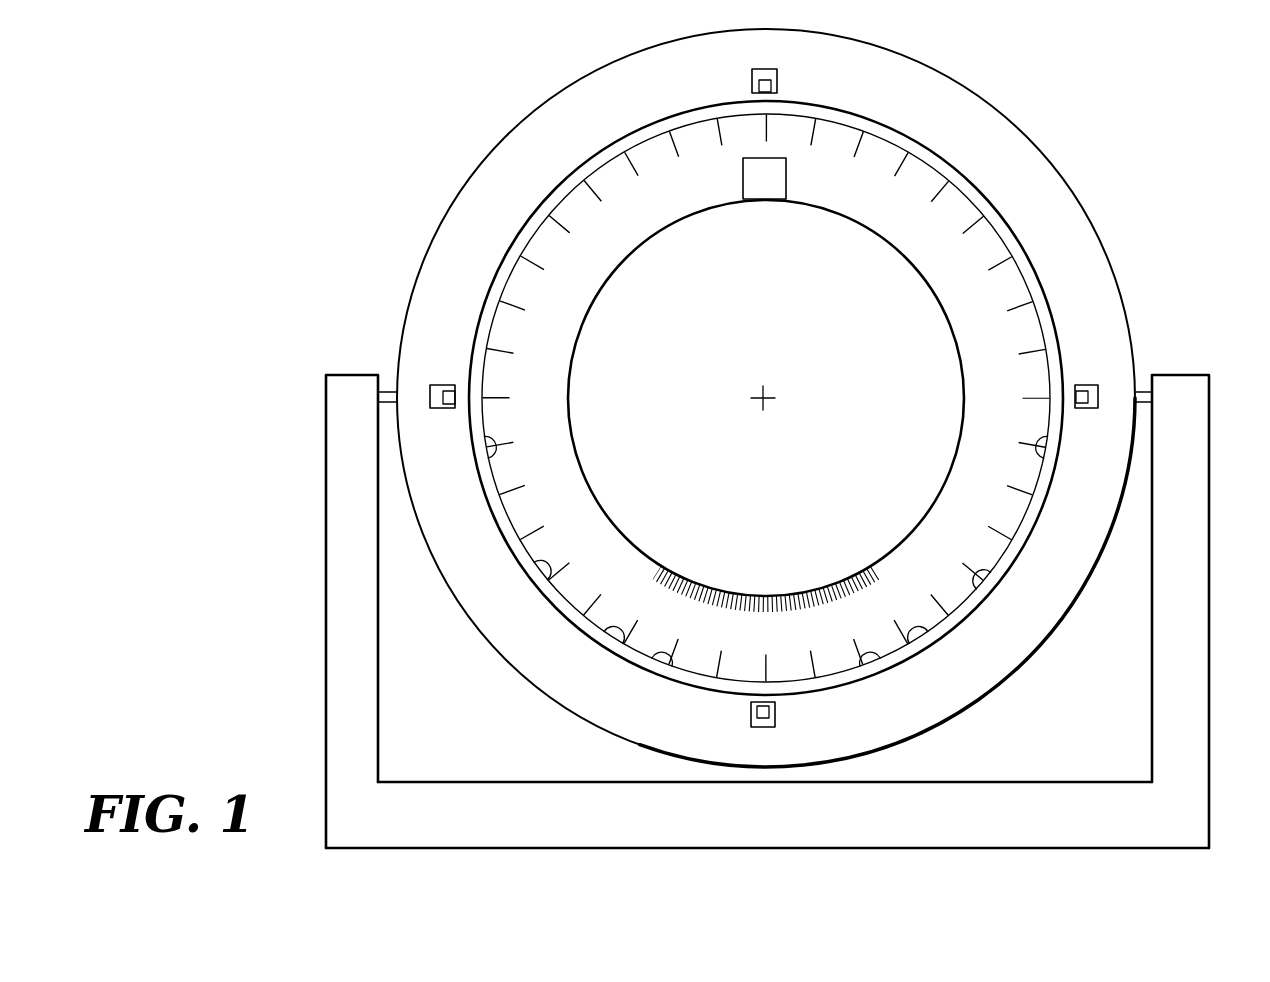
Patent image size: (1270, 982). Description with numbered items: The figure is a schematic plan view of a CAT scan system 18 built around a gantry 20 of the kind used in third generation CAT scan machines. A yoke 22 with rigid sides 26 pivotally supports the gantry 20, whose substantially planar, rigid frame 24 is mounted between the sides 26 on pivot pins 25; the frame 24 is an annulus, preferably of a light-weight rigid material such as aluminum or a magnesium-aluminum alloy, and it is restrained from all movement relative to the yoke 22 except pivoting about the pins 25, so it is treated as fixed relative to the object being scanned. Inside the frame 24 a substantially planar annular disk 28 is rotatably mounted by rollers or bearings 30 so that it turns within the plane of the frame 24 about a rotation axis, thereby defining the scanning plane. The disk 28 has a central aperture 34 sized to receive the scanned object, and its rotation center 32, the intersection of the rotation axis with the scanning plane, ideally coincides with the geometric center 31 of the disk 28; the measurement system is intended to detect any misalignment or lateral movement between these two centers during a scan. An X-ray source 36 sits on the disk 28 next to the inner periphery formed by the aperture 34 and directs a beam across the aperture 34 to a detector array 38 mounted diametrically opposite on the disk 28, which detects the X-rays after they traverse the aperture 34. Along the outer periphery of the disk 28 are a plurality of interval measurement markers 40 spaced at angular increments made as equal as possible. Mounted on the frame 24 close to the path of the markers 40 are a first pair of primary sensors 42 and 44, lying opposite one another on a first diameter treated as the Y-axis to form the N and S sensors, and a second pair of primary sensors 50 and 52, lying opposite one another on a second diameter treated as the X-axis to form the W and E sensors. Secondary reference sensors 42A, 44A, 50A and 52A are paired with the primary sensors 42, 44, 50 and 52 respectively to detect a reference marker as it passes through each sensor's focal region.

The CAT scan system 18 is at (434, 198).
The gantry 20 is at (1108, 235).
The yoke 22 is at (352, 493).
The frame 24 is at (456, 283).
The pivot pins 25 is at (387, 392).
The rigid sides 26 is at (347, 400).
The annular disk 28 is at (948, 208).
The rollers or bearings 30 is at (530, 586).
The geometric center 31 is at (765, 396).
The rotation center 32 is at (770, 397).
The central aperture 34 is at (668, 366).
The X-ray source 36 is at (766, 185).
The detector array 38 is at (791, 588).
The markers 40 is at (560, 225).
The primary sensor 42 is at (767, 77).
The reference sensor 42A is at (770, 87).
The primary sensor 44 is at (766, 723).
The reference sensor 44A is at (776, 712).
The primary sensor 50 is at (443, 392).
The reference sensor 50A is at (449, 402).
The primary sensor 52 is at (1085, 392).
The reference sensor 52A is at (1080, 404).